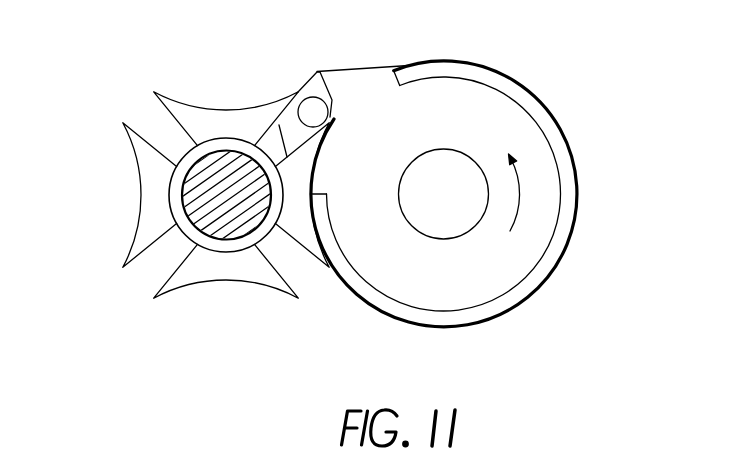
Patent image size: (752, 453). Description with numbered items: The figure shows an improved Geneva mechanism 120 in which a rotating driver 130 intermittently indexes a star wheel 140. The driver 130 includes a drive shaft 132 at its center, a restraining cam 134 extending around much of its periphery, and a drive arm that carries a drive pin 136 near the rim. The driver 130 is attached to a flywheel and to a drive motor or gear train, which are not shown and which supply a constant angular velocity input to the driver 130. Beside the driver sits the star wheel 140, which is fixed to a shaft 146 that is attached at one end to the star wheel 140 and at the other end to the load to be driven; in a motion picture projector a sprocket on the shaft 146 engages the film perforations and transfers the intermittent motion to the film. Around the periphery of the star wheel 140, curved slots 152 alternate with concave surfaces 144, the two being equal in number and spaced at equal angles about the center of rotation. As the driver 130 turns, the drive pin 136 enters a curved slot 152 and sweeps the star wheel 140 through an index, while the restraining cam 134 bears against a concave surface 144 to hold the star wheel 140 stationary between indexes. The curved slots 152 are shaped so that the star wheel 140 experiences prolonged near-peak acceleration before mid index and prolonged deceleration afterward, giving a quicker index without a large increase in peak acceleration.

The Geneva mechanism 120 is at (297, 336).
The driver 130 is at (512, 186).
The drive shaft 132 is at (475, 221).
The restraining cam 134 is at (497, 78).
The drive pin 136 is at (315, 108).
The star wheel 140 is at (185, 171).
The concave surfaces 144 is at (128, 150).
The shaft 146 is at (222, 158).
The curved slots 152 is at (265, 137).